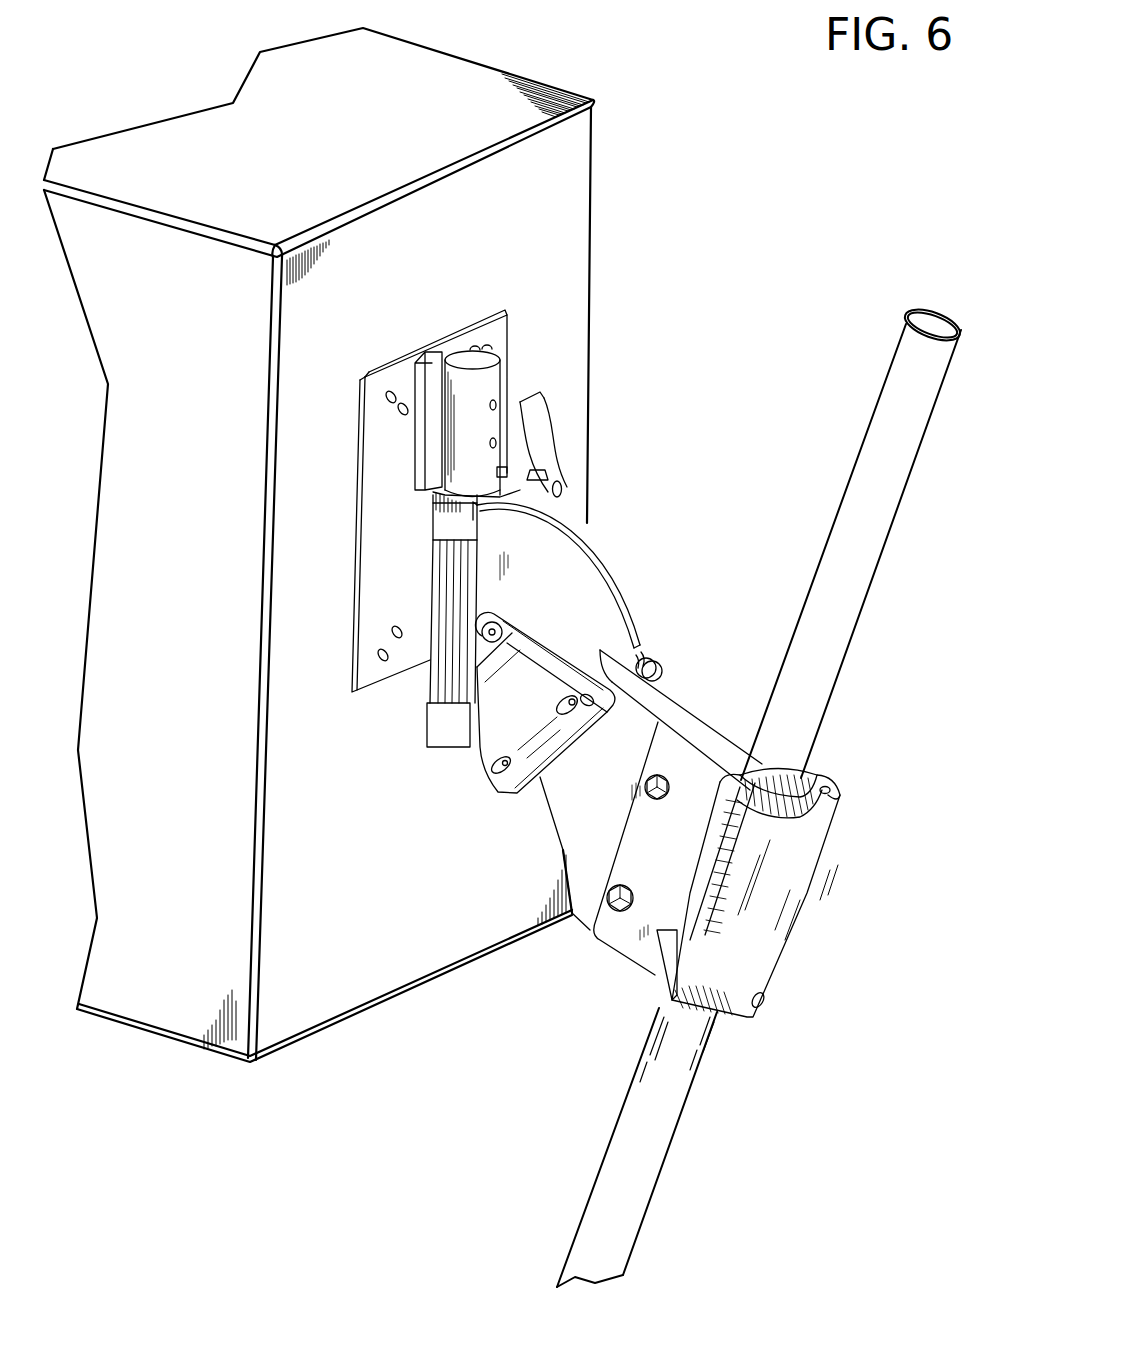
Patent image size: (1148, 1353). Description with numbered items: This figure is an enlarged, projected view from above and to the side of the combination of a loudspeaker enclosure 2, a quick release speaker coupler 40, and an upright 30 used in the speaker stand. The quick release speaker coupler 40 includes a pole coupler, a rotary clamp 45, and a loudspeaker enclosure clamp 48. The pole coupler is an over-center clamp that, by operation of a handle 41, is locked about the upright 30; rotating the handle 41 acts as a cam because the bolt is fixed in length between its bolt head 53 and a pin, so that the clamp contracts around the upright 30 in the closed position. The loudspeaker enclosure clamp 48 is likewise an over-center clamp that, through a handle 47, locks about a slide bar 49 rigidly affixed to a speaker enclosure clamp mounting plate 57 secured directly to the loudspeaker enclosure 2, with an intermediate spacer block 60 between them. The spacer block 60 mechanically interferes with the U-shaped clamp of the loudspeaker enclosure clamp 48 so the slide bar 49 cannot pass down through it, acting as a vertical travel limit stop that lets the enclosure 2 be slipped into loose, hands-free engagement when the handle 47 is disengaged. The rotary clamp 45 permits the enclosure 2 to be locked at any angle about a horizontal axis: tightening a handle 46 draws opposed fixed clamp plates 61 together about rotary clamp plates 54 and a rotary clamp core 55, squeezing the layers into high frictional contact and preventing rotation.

The loudspeaker enclosure 2 is at (595, 127).
The upright 30 is at (879, 400).
The quick release speaker coupler 40 is at (577, 930).
The handle 41 is at (767, 970).
The rotary clamp 45 is at (629, 584).
The handle 46 is at (475, 750).
The handle 47 is at (555, 448).
The loudspeaker enclosure clamp 48 is at (549, 383).
The slide bar 49 is at (487, 382).
The bolt head 53 is at (663, 671).
The rotary clamp plates 54 is at (600, 622).
The rotary clamp core 55 is at (667, 707).
The speaker enclosure clamp mounting plate 57 is at (377, 600).
The spacer block 60 is at (425, 437).
The fixed clamp plates 61 is at (553, 670).